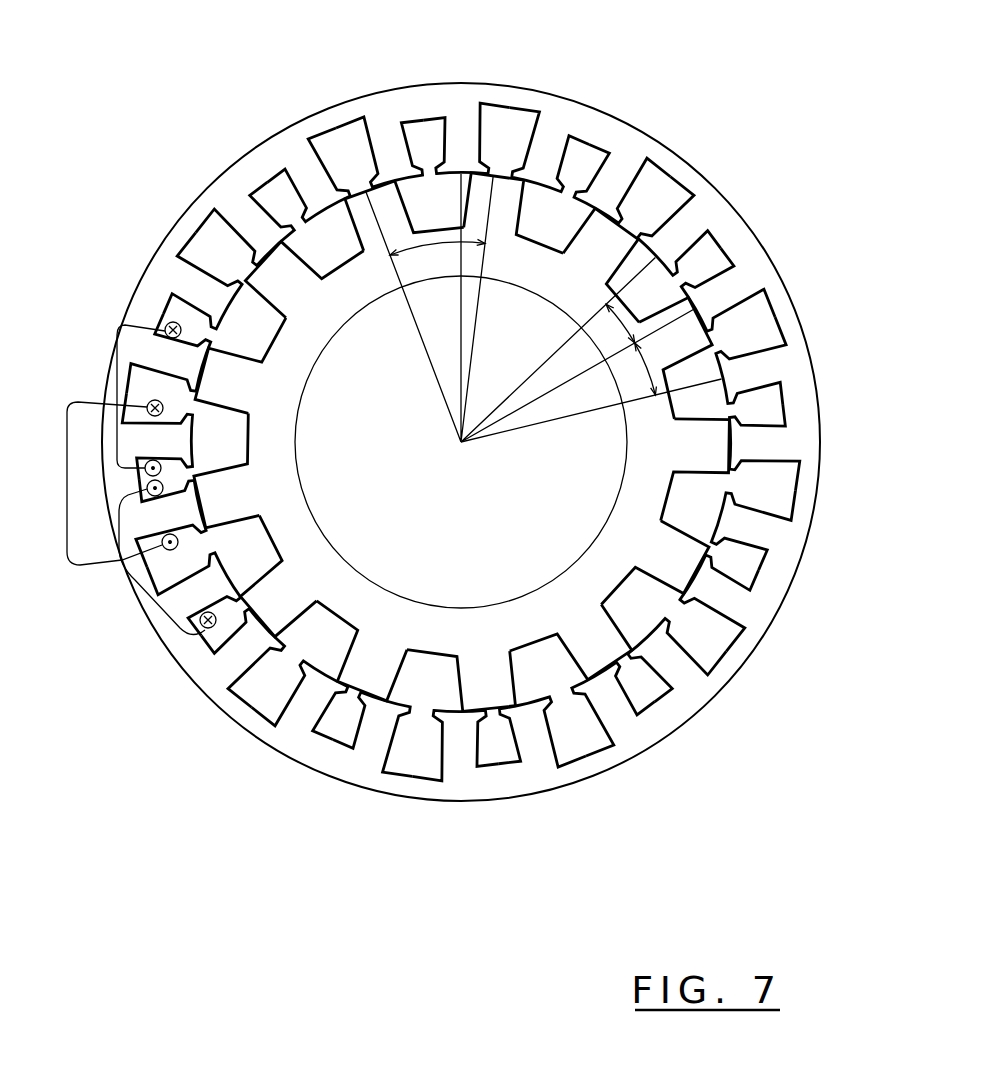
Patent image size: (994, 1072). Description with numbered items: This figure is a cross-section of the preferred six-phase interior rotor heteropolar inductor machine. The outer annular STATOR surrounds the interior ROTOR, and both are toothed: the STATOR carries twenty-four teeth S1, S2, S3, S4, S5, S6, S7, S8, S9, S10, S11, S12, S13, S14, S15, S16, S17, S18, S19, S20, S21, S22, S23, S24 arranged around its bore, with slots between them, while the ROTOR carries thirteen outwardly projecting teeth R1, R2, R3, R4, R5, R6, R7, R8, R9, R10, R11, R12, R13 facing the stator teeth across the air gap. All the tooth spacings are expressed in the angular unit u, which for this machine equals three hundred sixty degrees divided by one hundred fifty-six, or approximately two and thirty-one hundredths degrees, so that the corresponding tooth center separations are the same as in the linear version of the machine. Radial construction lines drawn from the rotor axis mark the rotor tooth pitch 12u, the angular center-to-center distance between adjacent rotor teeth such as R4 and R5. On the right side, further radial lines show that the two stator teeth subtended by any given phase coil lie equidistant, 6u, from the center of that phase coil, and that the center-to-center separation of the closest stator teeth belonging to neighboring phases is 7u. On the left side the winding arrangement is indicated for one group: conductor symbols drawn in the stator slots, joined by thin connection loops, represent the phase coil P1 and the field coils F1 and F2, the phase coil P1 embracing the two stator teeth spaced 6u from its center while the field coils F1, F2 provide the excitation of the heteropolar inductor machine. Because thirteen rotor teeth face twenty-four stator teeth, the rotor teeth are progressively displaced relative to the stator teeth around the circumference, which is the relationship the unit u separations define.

The stator STATOR is at (517, 102).
The rotor ROTOR is at (305, 390).
The rotor tooth pitch 12u is at (429, 308).
The stator tooth to phase coil center separation 6u is at (577, 350).
The closest neighbor-phase stator tooth separation 7u is at (591, 392).
The stator tooth S1 is at (175, 519).
The stator tooth S2 is at (165, 442).
The stator tooth S3 is at (175, 365).
The stator tooth S4 is at (205, 294).
The stator tooth S5 is at (252, 233).
The stator tooth S6 is at (313, 186).
The stator tooth S7 is at (384, 156).
The stator tooth S8 is at (461, 146).
The stator tooth S9 is at (538, 156).
The stator tooth S10 is at (609, 186).
The stator tooth S11 is at (670, 233).
The stator tooth S12 is at (717, 294).
The stator tooth S13 is at (747, 365).
The stator tooth S14 is at (757, 442).
The stator tooth S15 is at (747, 519).
The stator tooth S16 is at (717, 590).
The stator tooth S17 is at (670, 651).
The stator tooth S18 is at (609, 698).
The stator tooth S19 is at (538, 728).
The stator tooth S20 is at (461, 738).
The stator tooth S21 is at (384, 728).
The stator tooth S22 is at (313, 698).
The stator tooth S23 is at (252, 651).
The stator tooth S24 is at (205, 590).
The rotor tooth R1 is at (227, 470).
The rotor tooth R2 is at (240, 359).
The rotor tooth R3 is at (304, 265).
The rotor tooth R4 is at (404, 226).
The rotor tooth R5 is at (517, 224).
The rotor tooth R6 is at (617, 265).
The rotor tooth R7 is at (681, 358).
The rotor tooth R8 is at (695, 470).
The rotor tooth R9 is at (655, 576).
The rotor tooth R10 is at (571, 650).
The rotor tooth R11 is at (461, 677).
The rotor tooth R12 is at (352, 651).
The rotor tooth R13 is at (266, 576).
The field coil F1 is at (140, 575).
The field coil F2 is at (100, 385).
The phase coil P1 is at (66, 496).